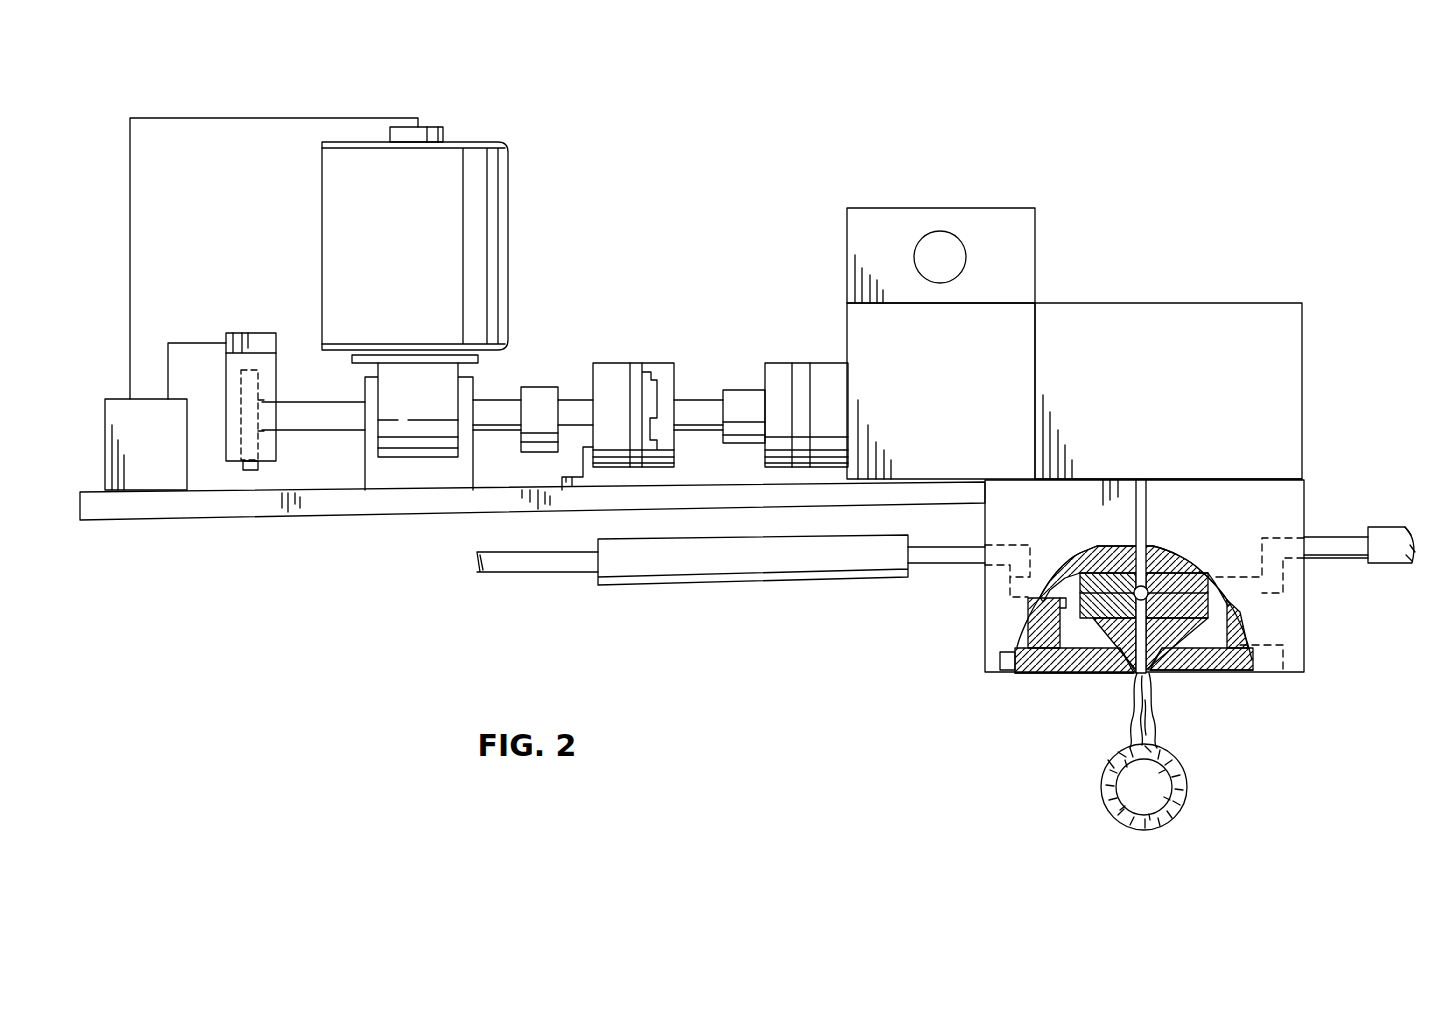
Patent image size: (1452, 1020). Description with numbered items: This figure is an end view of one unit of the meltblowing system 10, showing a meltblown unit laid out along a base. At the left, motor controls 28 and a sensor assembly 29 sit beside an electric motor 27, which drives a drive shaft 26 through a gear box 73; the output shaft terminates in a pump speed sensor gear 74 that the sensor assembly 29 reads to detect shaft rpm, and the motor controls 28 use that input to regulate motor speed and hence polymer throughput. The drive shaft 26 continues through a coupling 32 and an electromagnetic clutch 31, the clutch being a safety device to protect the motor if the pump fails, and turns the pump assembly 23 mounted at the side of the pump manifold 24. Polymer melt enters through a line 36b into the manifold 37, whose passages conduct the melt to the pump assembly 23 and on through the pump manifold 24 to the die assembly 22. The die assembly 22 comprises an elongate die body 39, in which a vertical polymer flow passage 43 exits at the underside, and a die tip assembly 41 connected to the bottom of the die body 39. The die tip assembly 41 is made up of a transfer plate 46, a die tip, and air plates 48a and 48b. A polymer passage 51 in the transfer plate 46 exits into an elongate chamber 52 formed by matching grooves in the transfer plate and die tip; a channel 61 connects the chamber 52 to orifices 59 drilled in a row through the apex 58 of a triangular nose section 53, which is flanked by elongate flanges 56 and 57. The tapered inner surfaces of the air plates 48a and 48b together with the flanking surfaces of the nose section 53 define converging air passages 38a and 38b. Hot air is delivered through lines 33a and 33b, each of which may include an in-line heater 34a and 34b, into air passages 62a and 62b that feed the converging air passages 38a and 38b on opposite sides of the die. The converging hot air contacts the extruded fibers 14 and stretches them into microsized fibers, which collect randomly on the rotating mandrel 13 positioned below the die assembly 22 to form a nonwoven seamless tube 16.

The meltblowing system 10 is at (740, 172).
The rotating mandrel 13 is at (1157, 800).
The fibers 14 is at (1130, 725).
The nonwoven seamless tube 16 is at (1130, 820).
The die assembly 22 is at (1188, 297).
The pump assembly 23 is at (825, 362).
The pump manifold 24 is at (996, 318).
The drive shaft 26 is at (490, 398).
The electric motor 27 is at (508, 233).
The motor controls 28 is at (150, 399).
The sensor assembly 29 is at (243, 335).
The electromagnetic clutch 31 is at (617, 362).
The coupling 32 is at (541, 386).
The hot air line 33a is at (953, 568).
The hot air line 33b is at (1342, 537).
The in-line heater 34a is at (700, 583).
The in-line heater 34b is at (1390, 565).
The polymer melt line 36b is at (921, 243).
The manifold 37 is at (928, 207).
The converging air passage 38a is at (1118, 673).
The converging air passage 38b is at (1175, 675).
The die body 39 is at (1216, 475).
The die tip assembly 41 is at (1192, 575).
The polymer flow passage 43 is at (1146, 548).
The transfer plate 46 is at (1265, 593).
The air plate 48a is at (1013, 676).
The air plate 48b is at (1225, 672).
The polymer passage 51 is at (1165, 572).
The elongate chamber 52 is at (1108, 562).
The nose section 53 is at (1200, 648).
The flange 56 is at (1020, 654).
The flange 57 is at (1165, 620).
The apex 58 is at (1136, 676).
The orifices 59 is at (1158, 675).
The channel 61 is at (1112, 615).
The air passage 62a is at (1022, 587).
The air passage 62b is at (1272, 562).
The gear box 73 is at (413, 400).
The pump speed sensor gear 74 is at (252, 470).